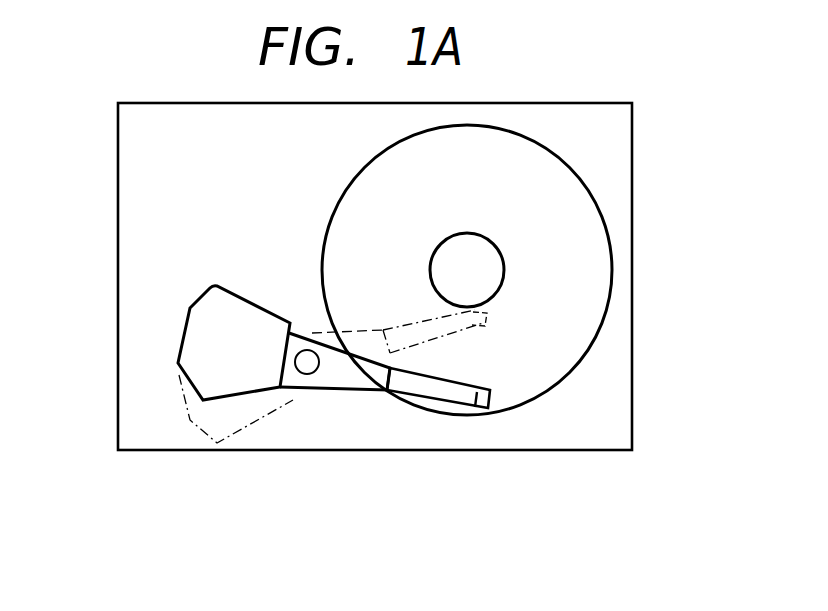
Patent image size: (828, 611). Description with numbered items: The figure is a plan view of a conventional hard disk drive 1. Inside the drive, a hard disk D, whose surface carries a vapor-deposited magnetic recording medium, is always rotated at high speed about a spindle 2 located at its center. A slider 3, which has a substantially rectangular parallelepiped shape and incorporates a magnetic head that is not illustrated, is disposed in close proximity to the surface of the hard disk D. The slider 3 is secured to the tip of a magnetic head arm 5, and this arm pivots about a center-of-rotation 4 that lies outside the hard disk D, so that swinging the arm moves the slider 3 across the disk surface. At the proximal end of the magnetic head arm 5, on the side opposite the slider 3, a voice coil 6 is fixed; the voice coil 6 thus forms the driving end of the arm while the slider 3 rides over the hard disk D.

The hard disk drive 1 is at (632, 392).
The spindle 2 is at (493, 253).
The slider 3 is at (493, 407).
The center-of-rotation 4 is at (312, 380).
The magnetic head arm 5 is at (353, 392).
The voice coil 6 is at (197, 337).
The hard disk D is at (587, 320).